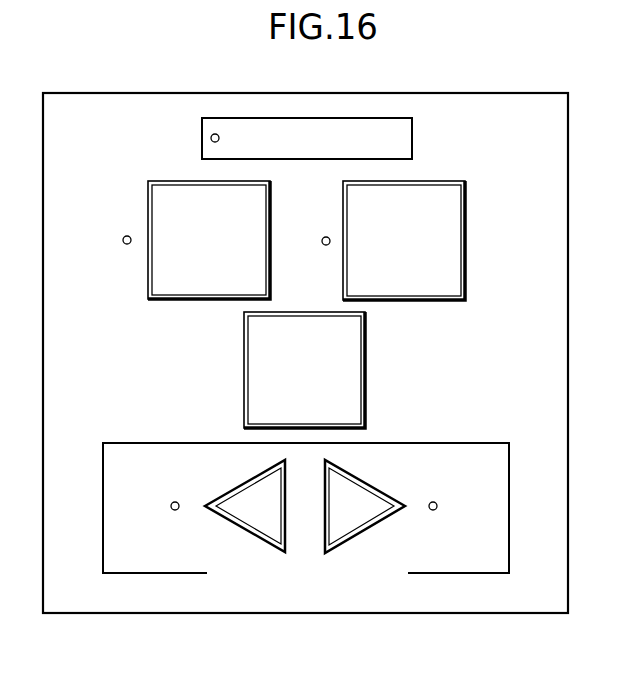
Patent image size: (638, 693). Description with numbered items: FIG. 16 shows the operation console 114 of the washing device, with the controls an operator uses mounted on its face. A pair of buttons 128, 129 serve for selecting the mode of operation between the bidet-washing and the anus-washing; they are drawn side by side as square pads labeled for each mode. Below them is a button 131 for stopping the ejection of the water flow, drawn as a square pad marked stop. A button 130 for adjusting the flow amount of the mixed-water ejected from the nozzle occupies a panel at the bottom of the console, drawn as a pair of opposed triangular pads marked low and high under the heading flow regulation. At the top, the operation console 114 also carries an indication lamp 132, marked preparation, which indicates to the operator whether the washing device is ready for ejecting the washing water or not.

The operation console 114 is at (305, 382).
The button 128 is at (427, 240).
The button 129 is at (175, 240).
The button 130 is at (317, 486).
The button 131 is at (267, 370).
The indication lamp 132 is at (343, 136).